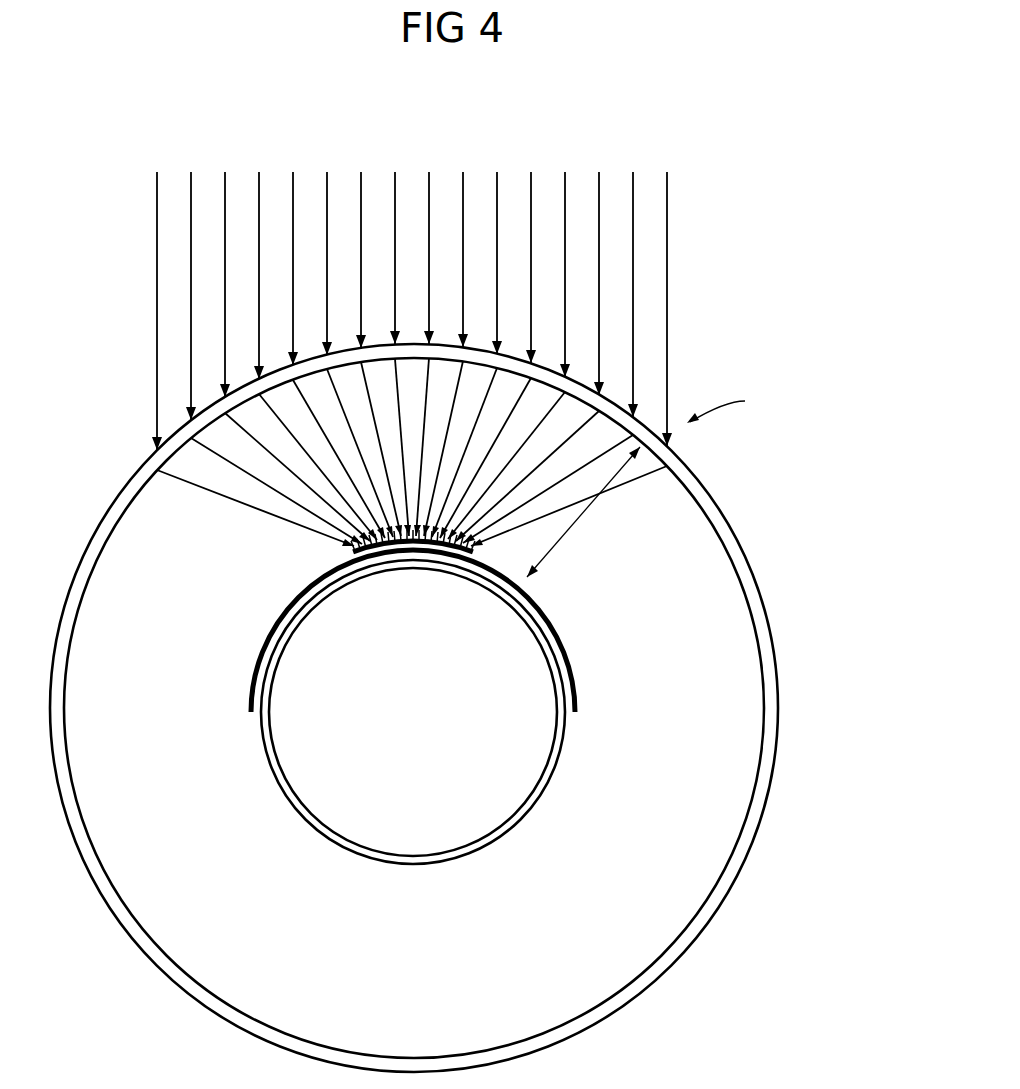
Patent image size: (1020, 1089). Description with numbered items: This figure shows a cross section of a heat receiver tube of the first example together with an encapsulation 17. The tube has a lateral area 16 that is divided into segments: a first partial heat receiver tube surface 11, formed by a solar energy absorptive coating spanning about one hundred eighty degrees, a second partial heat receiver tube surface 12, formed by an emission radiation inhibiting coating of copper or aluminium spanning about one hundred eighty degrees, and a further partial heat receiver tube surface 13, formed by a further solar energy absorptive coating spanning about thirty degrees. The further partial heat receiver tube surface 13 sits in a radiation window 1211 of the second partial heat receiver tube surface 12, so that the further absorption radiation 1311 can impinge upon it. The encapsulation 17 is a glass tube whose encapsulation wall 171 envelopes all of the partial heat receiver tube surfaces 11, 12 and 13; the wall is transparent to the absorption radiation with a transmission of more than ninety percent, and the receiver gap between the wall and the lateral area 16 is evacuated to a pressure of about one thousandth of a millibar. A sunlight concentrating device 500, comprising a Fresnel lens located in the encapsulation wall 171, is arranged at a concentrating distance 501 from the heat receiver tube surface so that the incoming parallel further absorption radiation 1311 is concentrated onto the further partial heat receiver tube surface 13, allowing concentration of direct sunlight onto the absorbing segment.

The first partial heat receiver tube surface 11 is at (490, 848).
The second partial heat receiver tube surface 12 is at (250, 652).
The further partial heat receiver tube surface 13 is at (360, 542).
The lateral area 16 is at (453, 565).
The encapsulation 17 is at (776, 670).
The encapsulation wall 171 is at (764, 752).
The sunlight concentrating device 500 is at (743, 404).
The concentrating distance 501 is at (563, 537).
The radiation window 1211 is at (398, 505).
The further absorption radiation 1311 is at (668, 240).